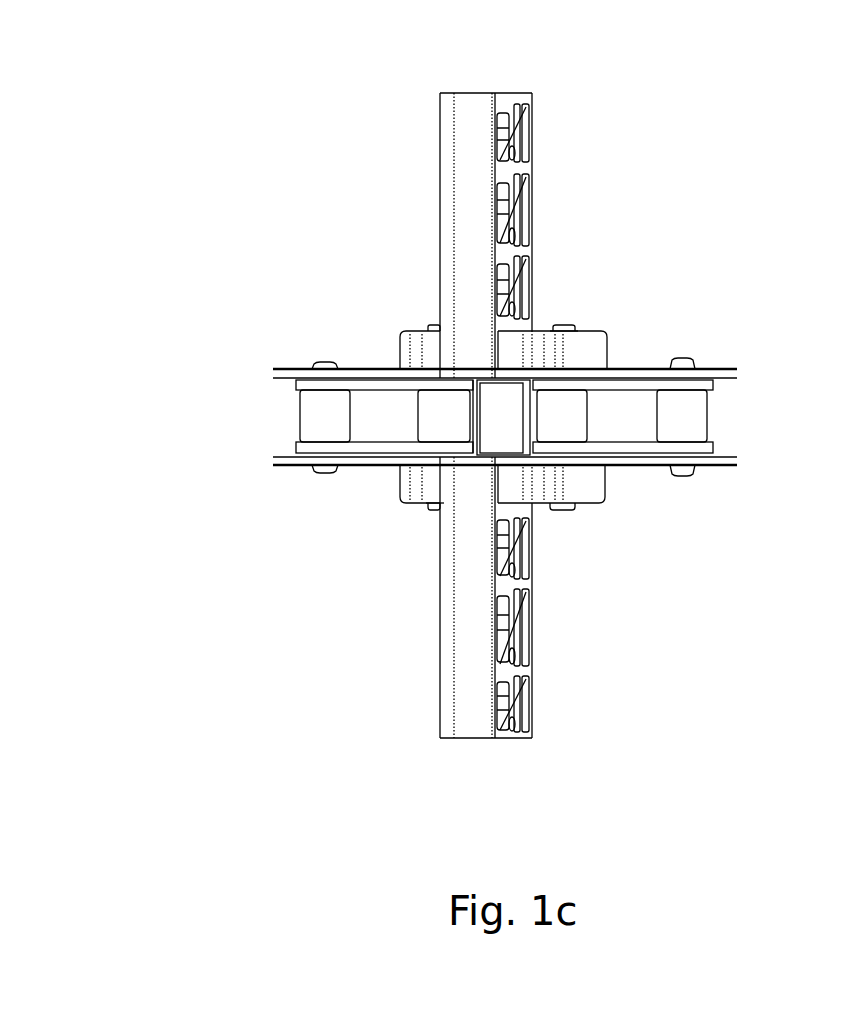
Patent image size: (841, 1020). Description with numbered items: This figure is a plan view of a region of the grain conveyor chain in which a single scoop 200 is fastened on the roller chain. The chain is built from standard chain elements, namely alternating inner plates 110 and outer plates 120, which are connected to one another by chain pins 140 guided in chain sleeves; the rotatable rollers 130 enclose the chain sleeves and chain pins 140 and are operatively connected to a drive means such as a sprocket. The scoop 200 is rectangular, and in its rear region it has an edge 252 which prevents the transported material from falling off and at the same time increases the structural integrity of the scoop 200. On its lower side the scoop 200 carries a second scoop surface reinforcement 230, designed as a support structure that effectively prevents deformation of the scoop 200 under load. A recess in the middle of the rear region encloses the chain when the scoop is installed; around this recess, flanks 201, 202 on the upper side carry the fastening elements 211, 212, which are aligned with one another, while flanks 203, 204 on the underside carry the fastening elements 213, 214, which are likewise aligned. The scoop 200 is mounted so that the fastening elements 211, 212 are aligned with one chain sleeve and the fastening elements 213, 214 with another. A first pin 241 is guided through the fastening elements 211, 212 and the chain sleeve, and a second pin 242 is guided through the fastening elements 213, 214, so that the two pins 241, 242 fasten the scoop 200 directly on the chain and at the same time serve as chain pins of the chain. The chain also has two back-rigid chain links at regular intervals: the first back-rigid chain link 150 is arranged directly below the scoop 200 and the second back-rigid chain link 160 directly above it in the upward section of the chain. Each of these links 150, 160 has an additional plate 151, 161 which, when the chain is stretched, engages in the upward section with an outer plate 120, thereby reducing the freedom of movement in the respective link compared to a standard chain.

The scoop 200 is at (438, 376).
The edge 252 is at (458, 190).
The second scoop surface reinforcement 230 is at (530, 190).
The chain pin 140 is at (290, 375).
The second back-rigid chain link 160 is at (317, 464).
The additional plate 161 is at (322, 363).
The additional plate 151 is at (383, 463).
The outer plate 120 is at (283, 386).
The inner plate 110 is at (296, 390).
The roller 130 is at (313, 427).
The first back-rigid chain link 150 is at (685, 476).
The flank 202 is at (388, 369).
The flank 204 is at (597, 343).
The flank 201 is at (402, 485).
The flank 203 is at (600, 488).
The fastening element 212 is at (430, 331).
The fastening element 211 is at (427, 503).
The first pin 241 is at (435, 508).
The fastening element 214 is at (563, 327).
The second pin 242 is at (562, 325).
The fastening element 213 is at (563, 510).